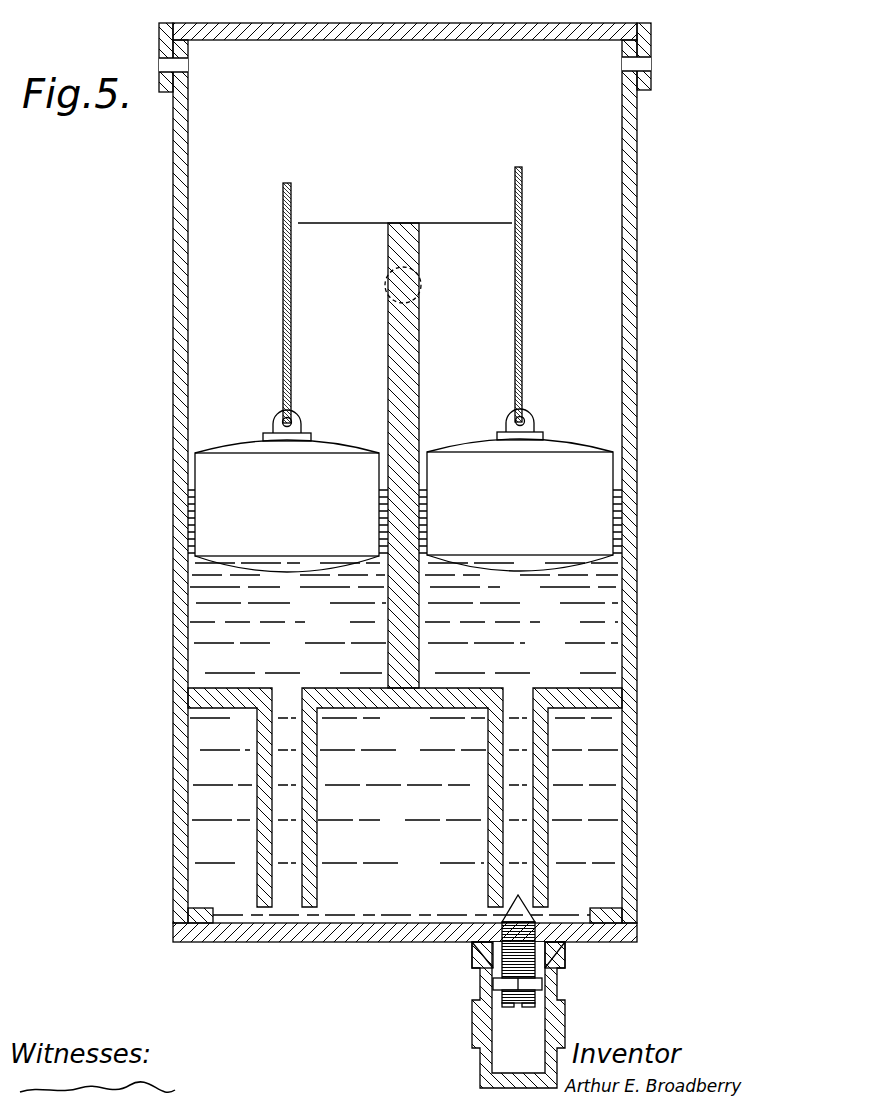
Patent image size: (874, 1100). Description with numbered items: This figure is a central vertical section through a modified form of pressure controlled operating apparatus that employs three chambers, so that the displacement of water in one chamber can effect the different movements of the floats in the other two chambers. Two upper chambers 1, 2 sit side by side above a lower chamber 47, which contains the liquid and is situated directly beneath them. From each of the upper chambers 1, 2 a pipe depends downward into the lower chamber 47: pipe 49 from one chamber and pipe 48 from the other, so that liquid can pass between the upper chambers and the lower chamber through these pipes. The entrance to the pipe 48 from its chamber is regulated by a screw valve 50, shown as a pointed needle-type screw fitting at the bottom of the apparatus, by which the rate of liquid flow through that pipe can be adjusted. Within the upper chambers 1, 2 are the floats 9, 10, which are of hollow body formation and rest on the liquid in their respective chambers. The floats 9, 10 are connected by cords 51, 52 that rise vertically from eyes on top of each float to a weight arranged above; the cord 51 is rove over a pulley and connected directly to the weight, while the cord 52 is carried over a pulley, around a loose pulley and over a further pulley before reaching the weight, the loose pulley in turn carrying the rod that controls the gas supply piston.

The chamber 1 is at (288, 618).
The chamber 2 is at (521, 618).
The float 9 is at (332, 453).
The float 10 is at (571, 452).
The chamber 47 is at (402, 790).
The pipe 48 is at (523, 805).
The pipe 49 is at (285, 805).
The screw valve 50 is at (565, 957).
The cord 51 is at (283, 321).
The cord 52 is at (523, 313).